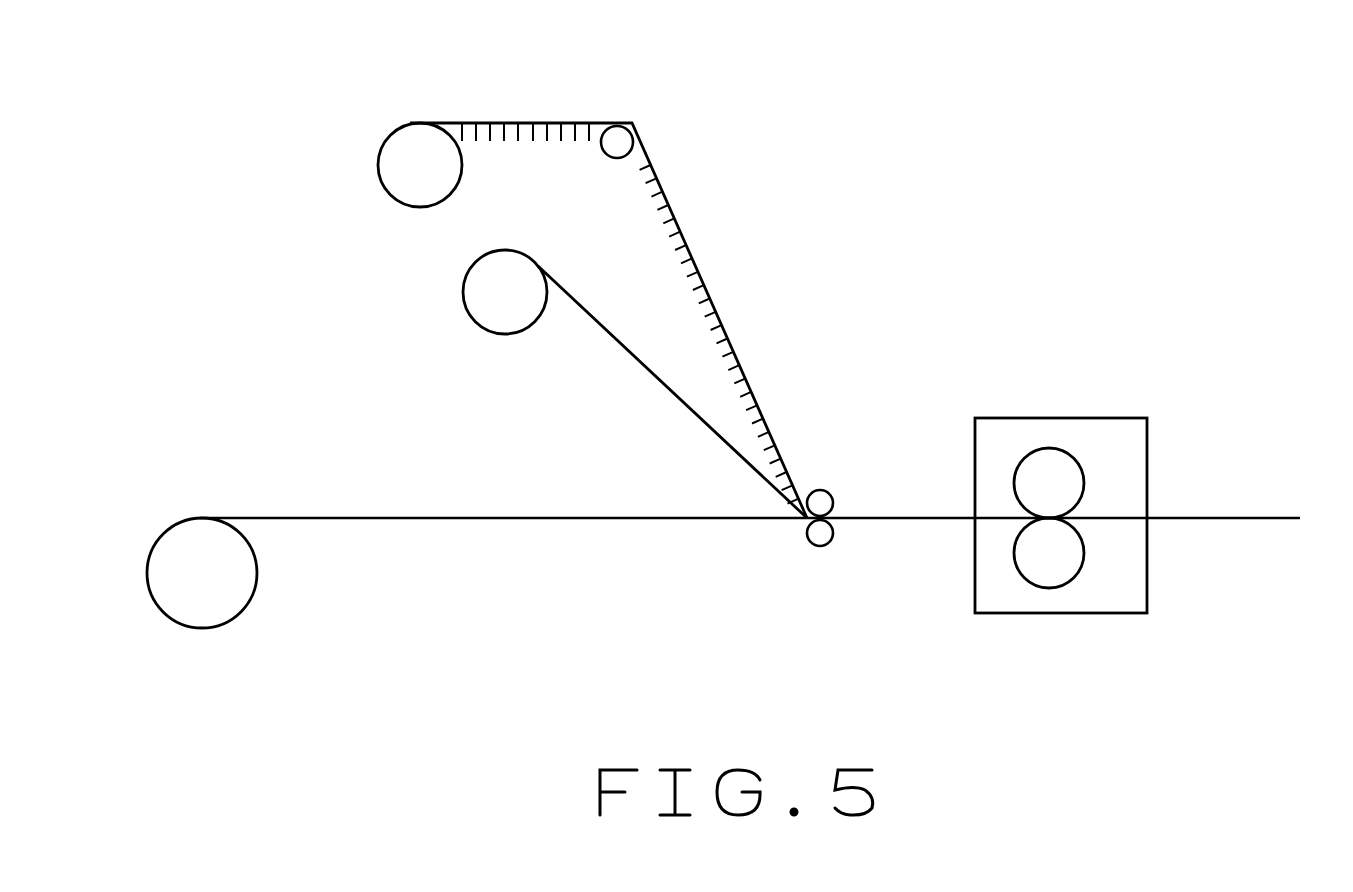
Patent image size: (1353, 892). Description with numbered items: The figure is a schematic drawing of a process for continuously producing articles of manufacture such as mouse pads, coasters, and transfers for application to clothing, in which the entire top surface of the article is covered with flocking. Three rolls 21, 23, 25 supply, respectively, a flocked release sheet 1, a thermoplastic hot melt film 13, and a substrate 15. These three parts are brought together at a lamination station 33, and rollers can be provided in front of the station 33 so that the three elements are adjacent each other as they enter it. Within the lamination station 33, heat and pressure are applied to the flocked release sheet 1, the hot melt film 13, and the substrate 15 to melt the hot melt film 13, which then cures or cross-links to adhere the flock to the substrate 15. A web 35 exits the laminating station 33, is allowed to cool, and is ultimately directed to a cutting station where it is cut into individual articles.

The flocked release sheet 1 is at (495, 123).
The thermoplastic hot melt film 13 is at (583, 313).
The substrate 15 is at (303, 518).
The roll of flocked release sheet 21 is at (378, 158).
The roll of thermoplastic hot melt film 23 is at (463, 283).
The roll of substrate 25 is at (250, 600).
The lamination station 33 is at (1010, 418).
The web 35 is at (1208, 518).